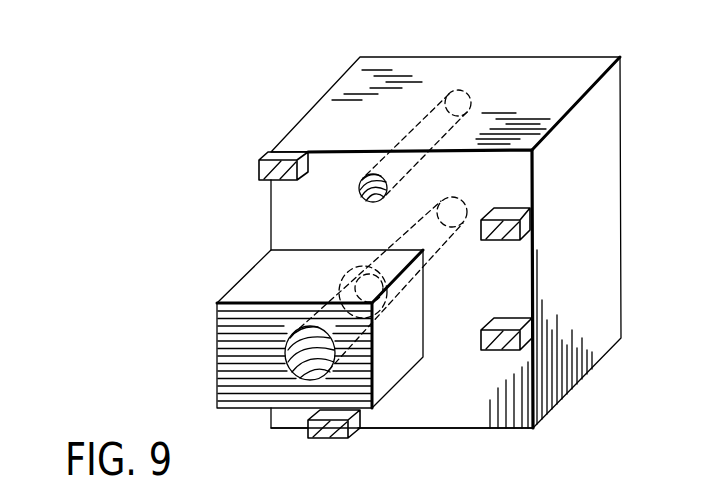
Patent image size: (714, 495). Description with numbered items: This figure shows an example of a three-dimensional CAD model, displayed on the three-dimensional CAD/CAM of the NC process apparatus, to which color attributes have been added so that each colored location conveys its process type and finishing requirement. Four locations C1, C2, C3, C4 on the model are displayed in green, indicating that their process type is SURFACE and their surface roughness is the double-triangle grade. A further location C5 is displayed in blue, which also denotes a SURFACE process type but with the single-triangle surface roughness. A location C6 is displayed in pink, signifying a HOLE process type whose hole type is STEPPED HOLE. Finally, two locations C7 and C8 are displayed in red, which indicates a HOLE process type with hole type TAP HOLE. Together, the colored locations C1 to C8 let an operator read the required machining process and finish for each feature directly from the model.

The location displayed in green C1 is at (263, 158).
The location displayed in green C2 is at (496, 236).
The location displayed in green C3 is at (481, 340).
The location displayed in green C4 is at (340, 439).
The location displayed in blue C5 is at (222, 345).
The location displayed in pink C6 is at (290, 337).
The location displayed in red C7 is at (366, 200).
The location displayed in red C8 is at (455, 200).